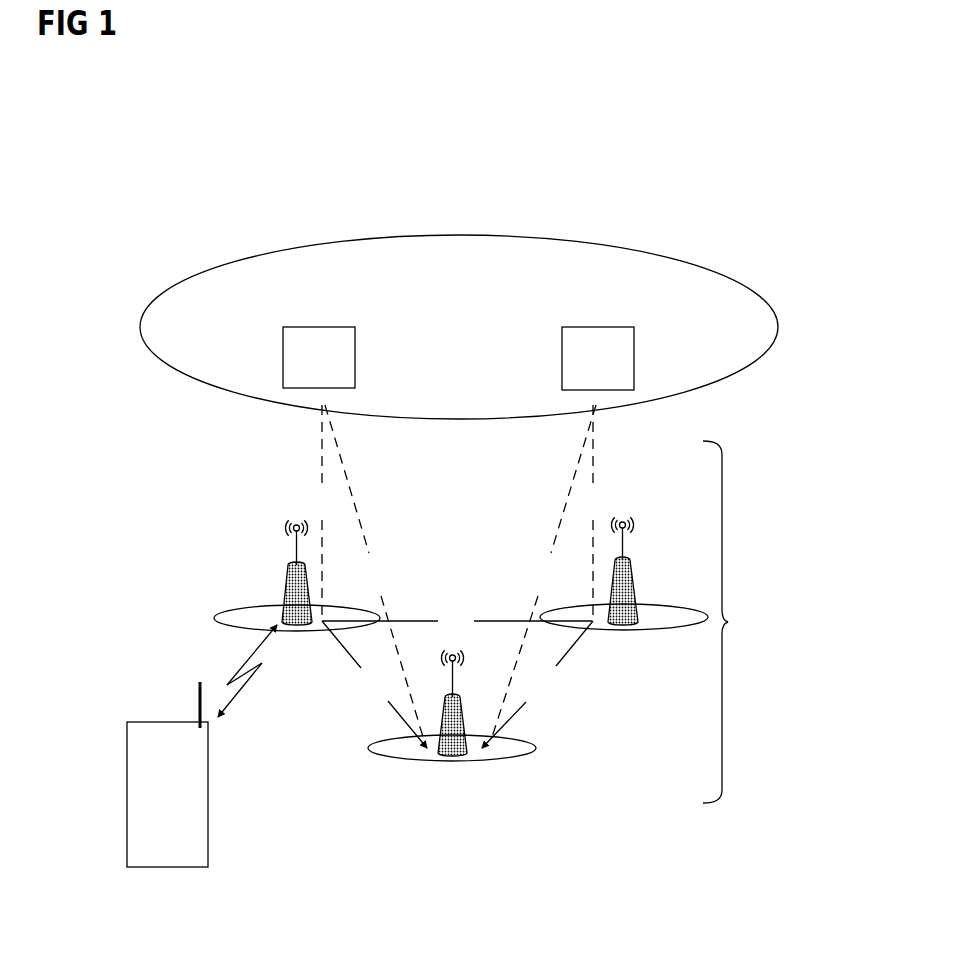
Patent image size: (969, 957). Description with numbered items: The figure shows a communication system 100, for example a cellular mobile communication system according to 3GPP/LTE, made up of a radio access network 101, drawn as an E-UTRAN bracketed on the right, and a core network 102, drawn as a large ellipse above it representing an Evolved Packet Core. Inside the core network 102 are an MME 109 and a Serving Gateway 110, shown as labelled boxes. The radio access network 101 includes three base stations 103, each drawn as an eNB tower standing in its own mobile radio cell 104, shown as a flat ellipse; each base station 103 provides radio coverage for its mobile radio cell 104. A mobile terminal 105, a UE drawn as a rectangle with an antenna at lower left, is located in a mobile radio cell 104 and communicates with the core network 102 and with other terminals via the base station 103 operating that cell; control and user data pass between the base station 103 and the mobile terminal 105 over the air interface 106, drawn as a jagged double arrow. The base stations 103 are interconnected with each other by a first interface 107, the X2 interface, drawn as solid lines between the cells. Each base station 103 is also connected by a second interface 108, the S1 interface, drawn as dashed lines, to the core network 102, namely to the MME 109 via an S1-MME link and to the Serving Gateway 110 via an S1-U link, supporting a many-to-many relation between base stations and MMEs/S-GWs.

The communication system 100 is at (753, 167).
The radio access network 101 is at (815, 600).
The core network 102 is at (768, 300).
The base station 103 is at (283, 568).
The mobile radio cell 104 is at (227, 622).
The mobile terminal 105 is at (158, 867).
The air interface 106 is at (262, 688).
The first interface 107 is at (365, 697).
The second interface 108 is at (322, 458).
The MME 109 is at (318, 326).
The Serving Gateway 110 is at (597, 327).